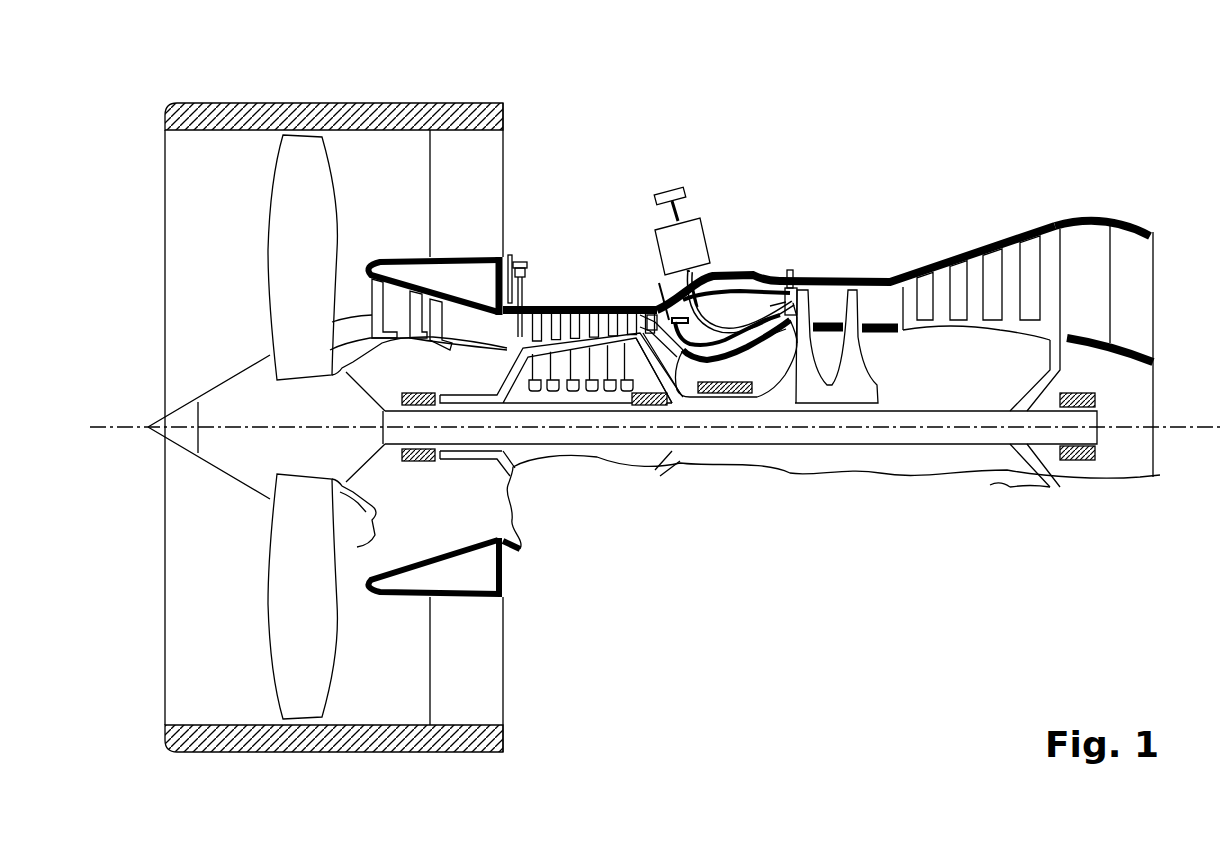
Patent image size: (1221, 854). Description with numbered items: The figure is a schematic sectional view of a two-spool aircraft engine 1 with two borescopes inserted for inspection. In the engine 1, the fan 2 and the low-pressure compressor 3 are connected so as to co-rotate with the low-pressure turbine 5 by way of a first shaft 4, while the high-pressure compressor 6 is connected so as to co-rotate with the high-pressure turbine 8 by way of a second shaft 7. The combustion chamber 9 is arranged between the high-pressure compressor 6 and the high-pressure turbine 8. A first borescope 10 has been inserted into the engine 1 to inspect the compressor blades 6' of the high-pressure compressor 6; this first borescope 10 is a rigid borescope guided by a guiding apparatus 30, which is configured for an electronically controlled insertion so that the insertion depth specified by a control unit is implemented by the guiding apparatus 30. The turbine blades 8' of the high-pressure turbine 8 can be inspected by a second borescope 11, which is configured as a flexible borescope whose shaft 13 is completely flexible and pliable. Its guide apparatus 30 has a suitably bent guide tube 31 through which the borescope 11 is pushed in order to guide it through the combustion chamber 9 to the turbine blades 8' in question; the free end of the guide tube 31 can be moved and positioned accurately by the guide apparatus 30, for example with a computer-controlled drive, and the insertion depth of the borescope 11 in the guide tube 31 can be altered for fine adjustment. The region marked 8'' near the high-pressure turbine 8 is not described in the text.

The two-spool engine 1 is at (1110, 183).
The fan 2 is at (250, 531).
The low-pressure compressor 3 is at (403, 297).
The first shaft 4 is at (950, 441).
The low-pressure turbine 5 is at (1050, 233).
The high-pressure compressor 6 is at (542, 438).
The compressor blades 6' is at (580, 286).
The second shaft 7 is at (733, 400).
The high-pressure turbine 8 is at (836, 416).
The turbine blades 8' is at (862, 264).
The turbine inlet region 8'' is at (798, 244).
The combustion chamber 9 is at (684, 360).
The first borescope 10 is at (527, 304).
The second borescope 11 is at (684, 172).
The shaft 13 is at (805, 290).
The guiding apparatus 30 is at (511, 258).
The guide tube 31 is at (747, 293).